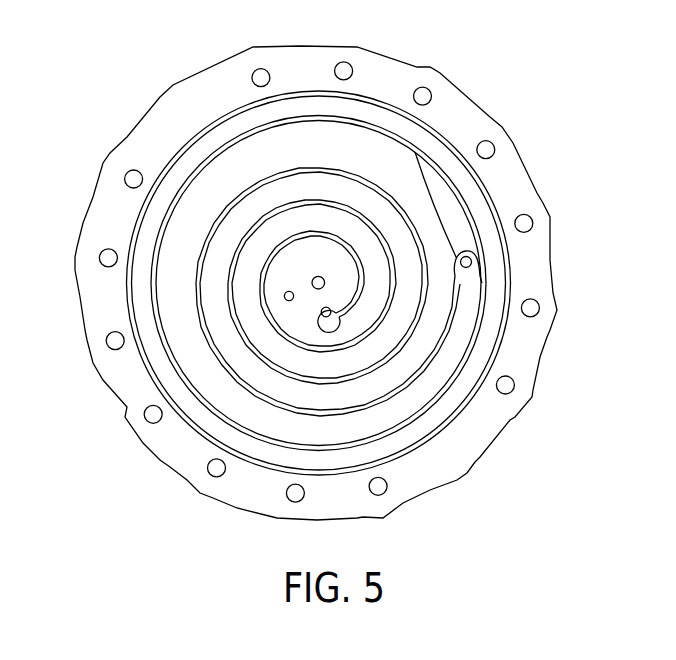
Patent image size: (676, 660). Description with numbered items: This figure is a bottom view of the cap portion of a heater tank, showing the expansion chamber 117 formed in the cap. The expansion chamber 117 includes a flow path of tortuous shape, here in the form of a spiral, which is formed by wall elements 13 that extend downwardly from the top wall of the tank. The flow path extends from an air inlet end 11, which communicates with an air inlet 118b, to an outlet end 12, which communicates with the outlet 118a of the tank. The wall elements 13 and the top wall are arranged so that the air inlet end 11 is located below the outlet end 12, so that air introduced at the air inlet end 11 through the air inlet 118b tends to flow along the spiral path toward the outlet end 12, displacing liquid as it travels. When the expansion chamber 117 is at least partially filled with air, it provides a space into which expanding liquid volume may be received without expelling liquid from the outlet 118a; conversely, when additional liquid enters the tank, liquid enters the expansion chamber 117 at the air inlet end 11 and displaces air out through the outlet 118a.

The air inlet end 11 is at (490, 320).
The outlet end 12 is at (178, 240).
The wall elements 13 is at (420, 370).
The expansion chamber 117 is at (200, 364).
The outlet 118a is at (316, 277).
The air inlet 118b is at (468, 262).